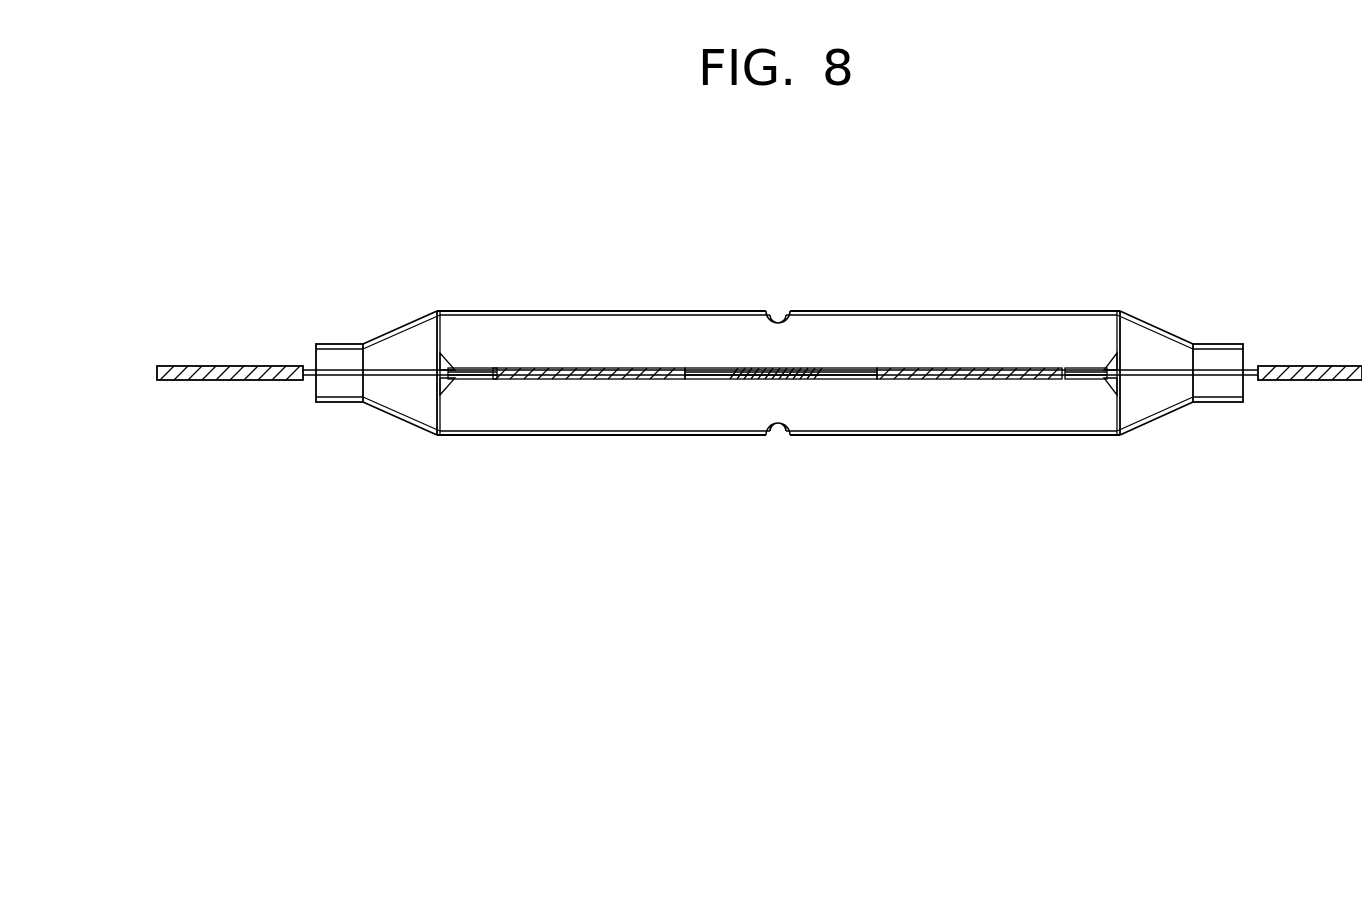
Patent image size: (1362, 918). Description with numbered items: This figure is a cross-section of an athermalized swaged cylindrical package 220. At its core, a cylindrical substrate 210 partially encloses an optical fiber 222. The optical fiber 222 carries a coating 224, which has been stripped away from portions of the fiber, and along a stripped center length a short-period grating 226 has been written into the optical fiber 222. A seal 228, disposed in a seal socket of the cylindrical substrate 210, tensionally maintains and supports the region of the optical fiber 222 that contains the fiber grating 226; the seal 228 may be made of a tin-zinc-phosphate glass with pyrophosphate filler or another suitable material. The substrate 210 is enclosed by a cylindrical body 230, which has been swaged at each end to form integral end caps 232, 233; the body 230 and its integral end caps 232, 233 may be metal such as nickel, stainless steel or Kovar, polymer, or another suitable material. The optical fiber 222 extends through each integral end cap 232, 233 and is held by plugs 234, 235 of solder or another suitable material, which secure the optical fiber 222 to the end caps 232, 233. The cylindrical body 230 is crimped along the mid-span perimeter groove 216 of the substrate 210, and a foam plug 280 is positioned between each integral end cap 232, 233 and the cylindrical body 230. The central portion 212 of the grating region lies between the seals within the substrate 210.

The athermalized swaged cylindrical package 220 is at (890, 201).
The cylindrical body 230 is at (912, 311).
The cylindrical substrate 210 is at (483, 408).
The mid-span perimeter groove 216 is at (778, 311).
The integral end cap 232 is at (373, 344).
The integral end cap 233 is at (1170, 333).
The foam plug 280 is at (413, 403).
The optical fiber 222 is at (310, 380).
The plug 234 is at (340, 385).
The plug 235 is at (1212, 387).
The coating 224 is at (207, 380).
The seal 228 is at (446, 368).
The short-period grating 226 is at (750, 377).
The fusible portion 212 is at (838, 379).